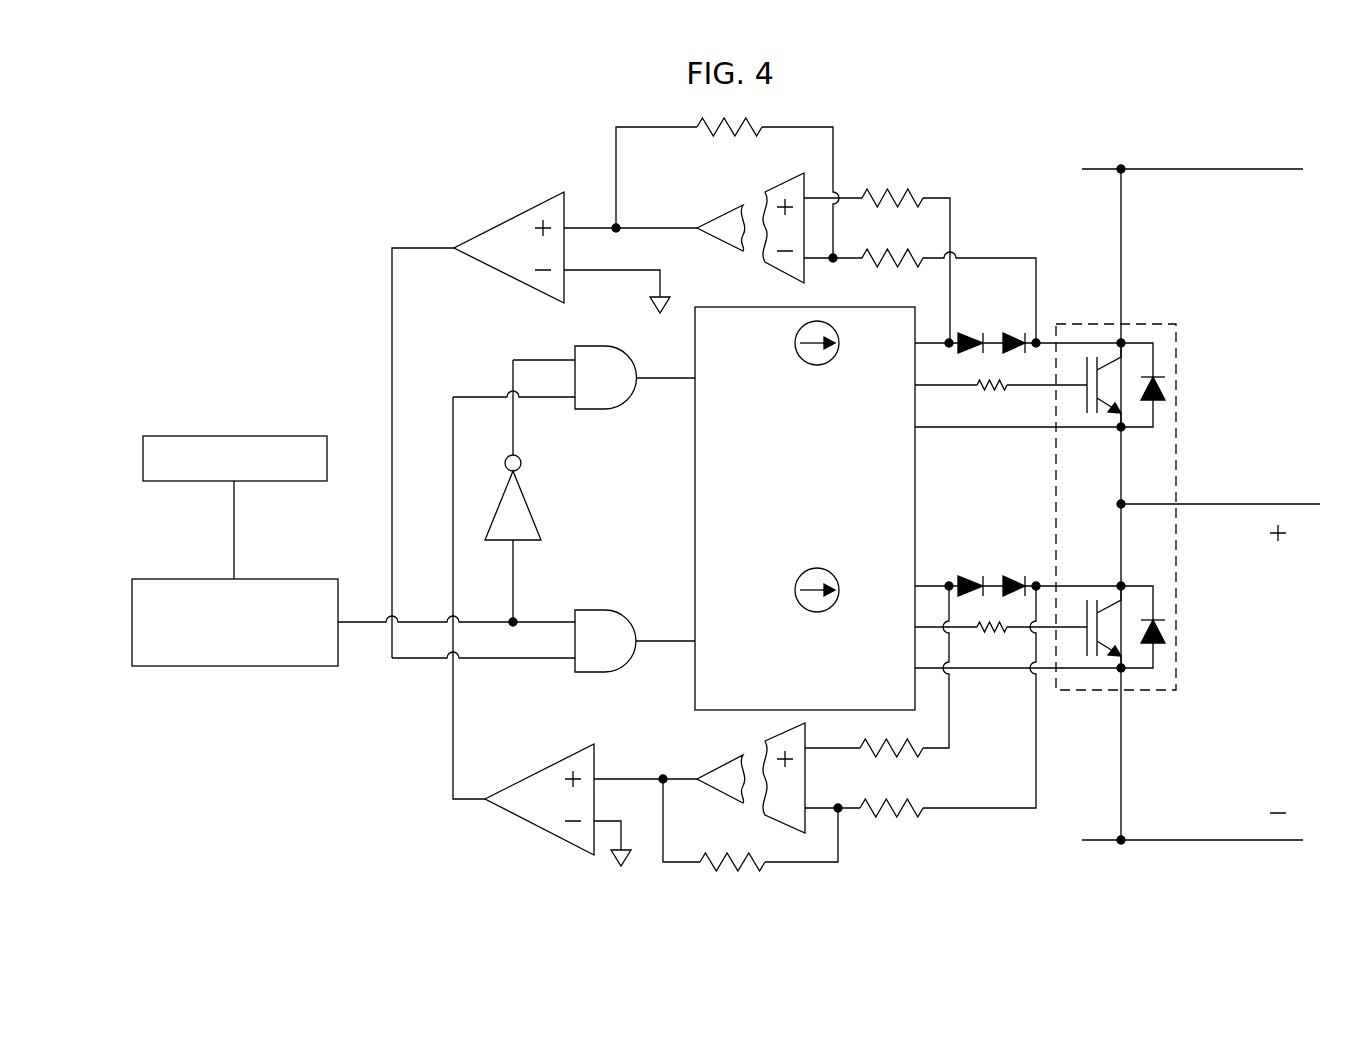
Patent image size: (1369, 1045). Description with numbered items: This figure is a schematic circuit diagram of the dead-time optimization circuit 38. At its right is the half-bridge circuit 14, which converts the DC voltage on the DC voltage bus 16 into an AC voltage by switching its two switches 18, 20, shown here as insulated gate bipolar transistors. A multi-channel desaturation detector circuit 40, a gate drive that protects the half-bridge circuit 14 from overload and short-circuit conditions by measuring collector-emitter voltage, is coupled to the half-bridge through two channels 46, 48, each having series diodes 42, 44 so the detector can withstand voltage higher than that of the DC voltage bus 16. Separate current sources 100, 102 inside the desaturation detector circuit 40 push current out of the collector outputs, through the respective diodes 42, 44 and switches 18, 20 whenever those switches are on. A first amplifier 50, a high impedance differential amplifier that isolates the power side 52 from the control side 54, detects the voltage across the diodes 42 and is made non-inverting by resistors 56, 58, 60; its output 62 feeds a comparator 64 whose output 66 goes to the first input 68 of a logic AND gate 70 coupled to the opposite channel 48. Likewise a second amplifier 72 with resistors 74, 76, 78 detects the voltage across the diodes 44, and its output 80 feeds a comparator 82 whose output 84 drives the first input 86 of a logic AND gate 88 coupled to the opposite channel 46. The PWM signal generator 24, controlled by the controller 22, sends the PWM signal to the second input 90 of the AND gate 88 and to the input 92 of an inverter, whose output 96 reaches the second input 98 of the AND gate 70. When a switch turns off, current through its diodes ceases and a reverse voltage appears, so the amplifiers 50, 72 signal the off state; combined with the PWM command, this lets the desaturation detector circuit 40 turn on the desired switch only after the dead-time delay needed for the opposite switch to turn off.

The half-bridge circuit 14 is at (1177, 357).
The DC voltage bus 16 is at (1243, 169).
The switch 18 is at (1092, 660).
The switch 20 is at (1092, 410).
The controller 22 is at (163, 436).
The PWM signal generator 24 is at (165, 666).
The dead-time optimization circuit 38 is at (413, 156).
The multi-channel desaturation detector circuit 40 is at (695, 500).
The diodes 42 is at (1014, 573).
The diodes 44 is at (1014, 330).
The desaturation detector circuit channel 46 is at (690, 641).
The desaturation detector circuit channel 48 is at (690, 378).
The first amplifier 50 is at (770, 815).
The power or secondary side 52 is at (996, 197).
The control or primary side 54 is at (585, 156).
The resistor 56 is at (890, 262).
The resistor 58 is at (895, 196).
The resistor 60 is at (742, 127).
The output of first amplifier 62 is at (700, 770).
The comparator 64 is at (517, 208).
The output of comparator 66 is at (443, 248).
The first input of logic AND gate 68 is at (562, 397).
The logic AND gate 70 is at (590, 346).
The second amplifier 72 is at (780, 190).
The resistor 74 is at (908, 750).
The resistor 76 is at (905, 812).
The resistor 78 is at (737, 860).
The output of second amplifier 80 is at (684, 228).
The comparator 82 is at (560, 820).
The output of comparator 84 is at (468, 800).
The first input of logic AND gate 86 is at (556, 665).
The logic AND gate 88 is at (580, 672).
The second input of logic AND gate 90 is at (575, 615).
The input of logic NOT gate 92 is at (511, 565).
The output of logic NOT gate 96 is at (513, 422).
The second input of logic AND gate 98 is at (557, 360).
The current source 100 is at (795, 590).
The current source 102 is at (816, 366).